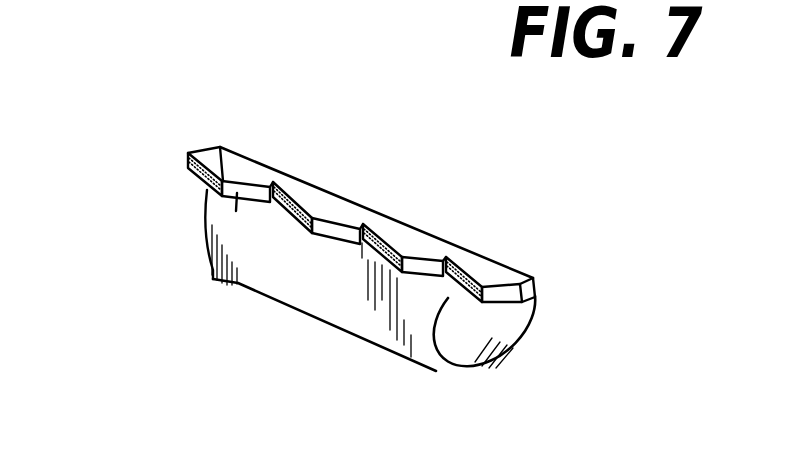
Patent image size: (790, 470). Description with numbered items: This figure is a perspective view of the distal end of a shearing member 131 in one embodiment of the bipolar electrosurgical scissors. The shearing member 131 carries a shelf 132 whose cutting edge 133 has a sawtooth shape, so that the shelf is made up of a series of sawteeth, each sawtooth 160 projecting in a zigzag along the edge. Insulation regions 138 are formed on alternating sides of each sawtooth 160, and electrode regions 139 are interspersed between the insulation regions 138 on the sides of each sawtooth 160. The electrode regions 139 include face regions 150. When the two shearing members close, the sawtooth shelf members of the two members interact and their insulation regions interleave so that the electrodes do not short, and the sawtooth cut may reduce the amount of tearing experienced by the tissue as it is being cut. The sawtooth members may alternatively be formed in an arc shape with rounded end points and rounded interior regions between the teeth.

The shearing member 131 is at (482, 340).
The shelf 132 is at (484, 280).
The cutting edge 133 is at (502, 284).
The insulation regions 138 is at (208, 179).
The electrode regions 139 is at (255, 183).
The face regions 150 is at (237, 193).
The sawtooth 160 is at (222, 170).